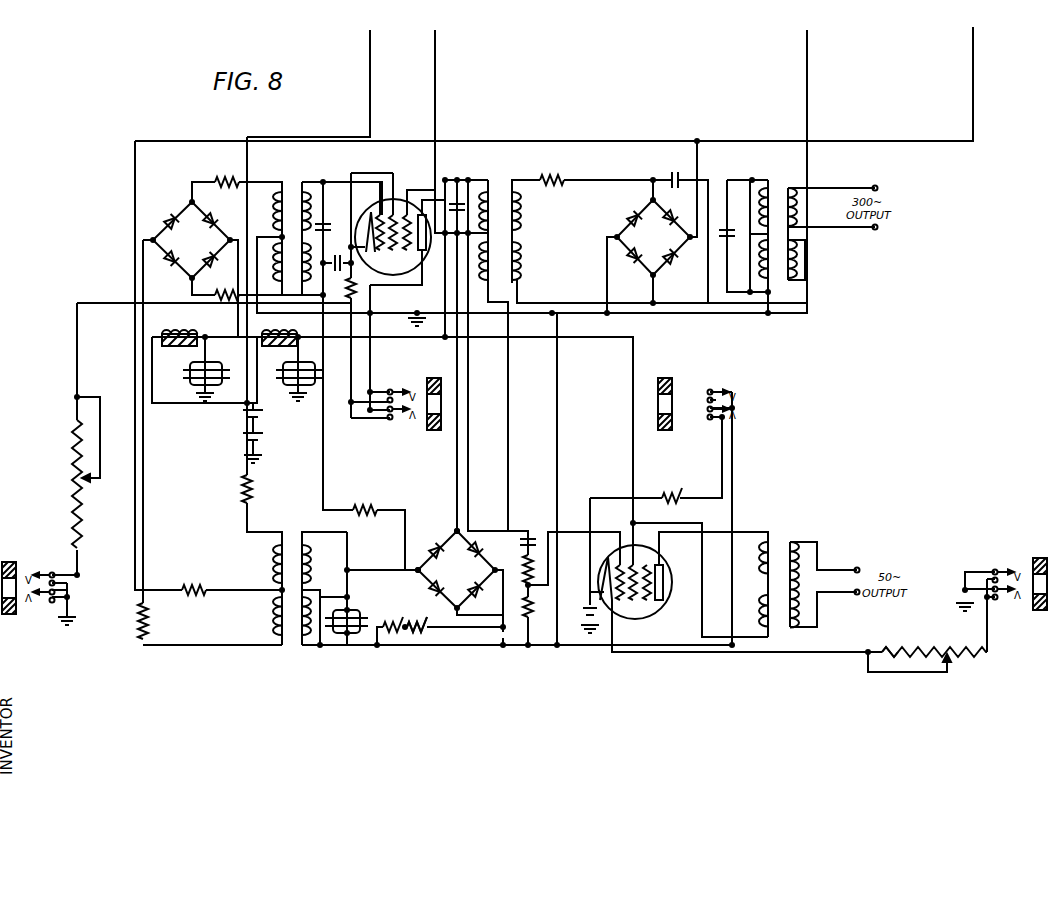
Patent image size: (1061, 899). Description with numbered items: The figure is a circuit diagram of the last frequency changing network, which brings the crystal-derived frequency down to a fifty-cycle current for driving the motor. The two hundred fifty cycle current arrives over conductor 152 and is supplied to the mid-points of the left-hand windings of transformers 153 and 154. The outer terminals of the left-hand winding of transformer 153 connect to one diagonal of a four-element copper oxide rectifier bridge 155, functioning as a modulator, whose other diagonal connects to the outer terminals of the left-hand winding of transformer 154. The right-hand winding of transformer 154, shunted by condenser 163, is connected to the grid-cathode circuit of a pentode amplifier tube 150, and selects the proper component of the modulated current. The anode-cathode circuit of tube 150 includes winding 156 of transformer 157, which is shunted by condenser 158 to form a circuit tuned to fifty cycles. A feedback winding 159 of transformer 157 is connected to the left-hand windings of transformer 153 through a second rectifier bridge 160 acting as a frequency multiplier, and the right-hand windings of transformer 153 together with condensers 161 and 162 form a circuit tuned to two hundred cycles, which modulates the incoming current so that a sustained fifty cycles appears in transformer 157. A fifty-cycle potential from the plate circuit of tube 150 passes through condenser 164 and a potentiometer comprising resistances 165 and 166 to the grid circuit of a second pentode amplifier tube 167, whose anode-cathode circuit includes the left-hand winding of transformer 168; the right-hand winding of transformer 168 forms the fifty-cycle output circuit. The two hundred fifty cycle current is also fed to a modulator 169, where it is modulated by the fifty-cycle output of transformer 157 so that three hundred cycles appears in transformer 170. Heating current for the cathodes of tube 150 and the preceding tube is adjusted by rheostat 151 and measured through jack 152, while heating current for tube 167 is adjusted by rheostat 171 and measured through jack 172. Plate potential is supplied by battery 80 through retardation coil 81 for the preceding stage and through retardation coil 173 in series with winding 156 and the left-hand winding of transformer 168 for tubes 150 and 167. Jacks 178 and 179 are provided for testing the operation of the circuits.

The battery 80 is at (262, 427).
The retardation coil 81 is at (176, 350).
The amplifier tube 150 is at (387, 199).
The rheostat 151 is at (70, 443).
The jack 152 is at (14, 562).
The transformer 153 is at (293, 545).
The transformer 154 is at (283, 193).
The copper oxide rectifier bridge 155 is at (191, 240).
The transformer winding 156 is at (489, 190).
The transformer 157 is at (505, 195).
The condenser 158 is at (453, 185).
The feedback winding 159 is at (510, 286).
The copper oxide rectifier bridge 160 is at (456, 569).
The condenser 161 is at (327, 640).
The condenser 162 is at (362, 636).
The condenser 163 is at (330, 222).
The condenser 164 is at (530, 537).
The resistance 165 is at (535, 568).
The resistance 166 is at (536, 638).
The amplifier tube 167 is at (648, 614).
The transformer 168 is at (781, 545).
The modulator 169 is at (653, 237).
The transformer 170 is at (773, 190).
The rheostat 171 is at (913, 650).
The jack 172 is at (1037, 558).
The retardation coil 173 is at (278, 350).
The jack 178 is at (432, 432).
The jack 179 is at (666, 432).